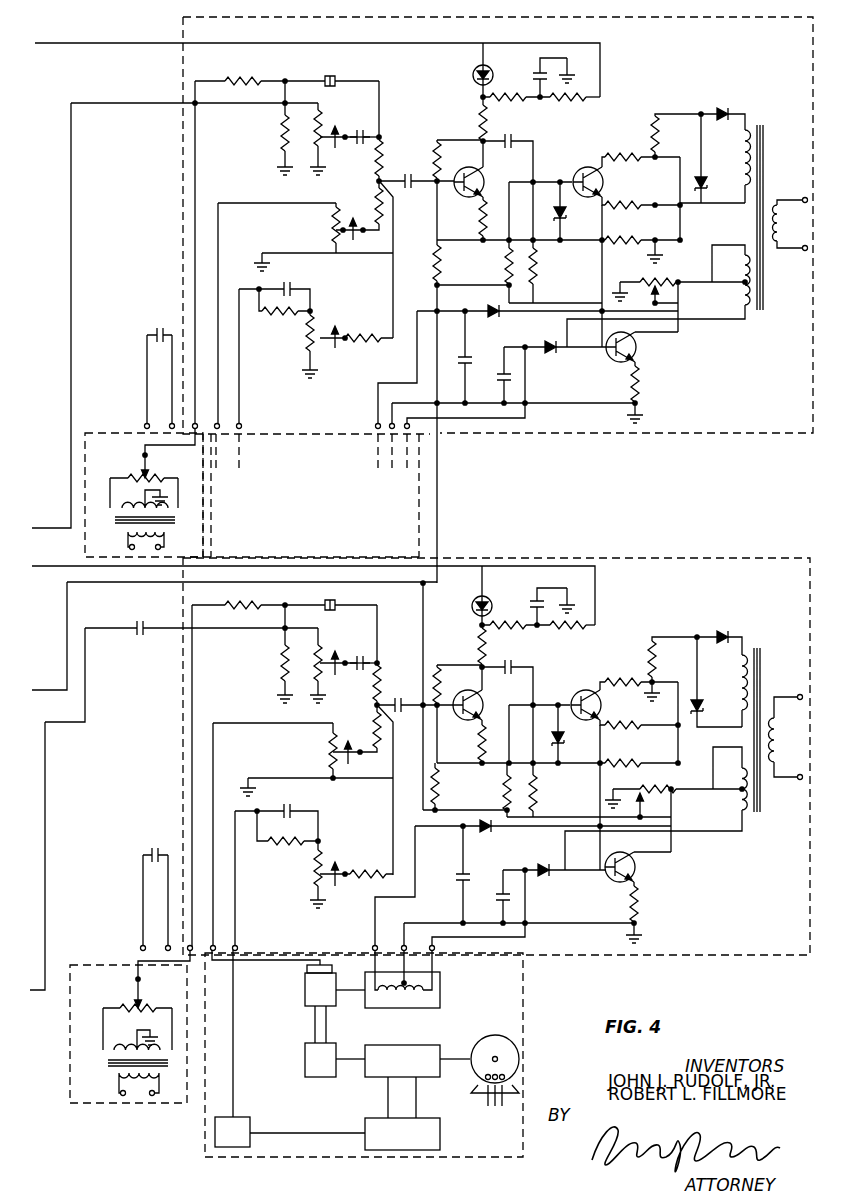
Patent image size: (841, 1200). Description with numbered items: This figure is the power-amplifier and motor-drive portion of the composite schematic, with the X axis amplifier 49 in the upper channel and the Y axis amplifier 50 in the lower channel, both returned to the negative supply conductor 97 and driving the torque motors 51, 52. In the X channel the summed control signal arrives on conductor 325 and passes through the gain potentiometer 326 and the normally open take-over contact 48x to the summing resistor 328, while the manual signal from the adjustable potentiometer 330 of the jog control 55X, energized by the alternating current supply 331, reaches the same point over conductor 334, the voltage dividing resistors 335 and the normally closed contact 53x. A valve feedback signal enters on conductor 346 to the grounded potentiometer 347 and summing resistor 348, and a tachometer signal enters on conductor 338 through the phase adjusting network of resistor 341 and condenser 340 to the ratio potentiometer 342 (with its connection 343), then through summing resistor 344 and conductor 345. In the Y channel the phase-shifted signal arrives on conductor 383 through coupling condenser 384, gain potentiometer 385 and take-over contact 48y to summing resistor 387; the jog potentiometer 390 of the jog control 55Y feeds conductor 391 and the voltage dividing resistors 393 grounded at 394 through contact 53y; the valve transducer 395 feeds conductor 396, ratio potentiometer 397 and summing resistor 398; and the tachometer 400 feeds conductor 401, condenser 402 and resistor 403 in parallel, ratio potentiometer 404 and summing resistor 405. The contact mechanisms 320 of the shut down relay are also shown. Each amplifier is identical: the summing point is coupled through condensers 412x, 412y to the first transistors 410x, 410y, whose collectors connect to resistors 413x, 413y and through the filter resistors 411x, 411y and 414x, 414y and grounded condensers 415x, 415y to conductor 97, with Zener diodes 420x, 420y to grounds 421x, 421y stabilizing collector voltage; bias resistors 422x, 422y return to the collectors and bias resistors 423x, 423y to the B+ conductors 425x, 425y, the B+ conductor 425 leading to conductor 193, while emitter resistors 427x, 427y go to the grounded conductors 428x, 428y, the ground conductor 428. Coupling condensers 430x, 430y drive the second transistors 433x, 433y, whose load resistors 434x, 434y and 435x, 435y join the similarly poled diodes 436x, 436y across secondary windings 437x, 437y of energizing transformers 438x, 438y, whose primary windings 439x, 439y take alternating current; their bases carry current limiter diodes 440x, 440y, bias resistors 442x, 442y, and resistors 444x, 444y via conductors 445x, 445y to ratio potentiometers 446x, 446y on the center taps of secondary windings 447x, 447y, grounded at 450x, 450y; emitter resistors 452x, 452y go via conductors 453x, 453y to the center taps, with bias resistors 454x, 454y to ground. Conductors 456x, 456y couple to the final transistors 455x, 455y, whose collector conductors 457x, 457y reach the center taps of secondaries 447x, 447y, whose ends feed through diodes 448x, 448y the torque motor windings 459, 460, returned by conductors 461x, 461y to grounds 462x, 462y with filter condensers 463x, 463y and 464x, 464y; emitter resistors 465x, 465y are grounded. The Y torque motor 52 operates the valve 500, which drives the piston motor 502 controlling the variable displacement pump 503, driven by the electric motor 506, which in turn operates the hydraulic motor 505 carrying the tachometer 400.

The B— conductor 97 is at (203, 43).
The X axis amplifier 49 is at (765, 396).
The Y axis amplifier 50 is at (728, 589).
The driving motor 51 is at (318, 512).
The torque motor 52 is at (283, 1034).
The conductor 325 is at (70, 518).
The conductor 334 is at (195, 236).
The voltage dividing resistors 335 is at (229, 80).
The normally closed contact 53x is at (330, 78).
The gain potentiometer 326 is at (320, 148).
The normally open contact 48x is at (359, 130).
The summing resistor 328 is at (381, 140).
The summing resistor 348 is at (375, 198).
The potentiometer 347 is at (334, 222).
The conductor 346 is at (218, 392).
The coupling condenser 412x is at (408, 188).
The conductor 345 is at (393, 290).
The grounded conductor 428x is at (393, 253).
The biasing resistor 422x is at (437, 152).
The Zener diode 420x is at (473, 75).
The resistor 411x is at (520, 82).
The resistor 414x is at (572, 98).
The grounded condenser 415x is at (536, 68).
The ground connection 421x is at (580, 72).
The resistor 413x is at (486, 122).
The first amplifying transistor 410x is at (485, 174).
The emitter resistor 427x is at (482, 218).
The condenser 430x is at (515, 136).
The current limiter diode 440x is at (566, 214).
The second transistor 433x is at (580, 178).
The load resistor 434x is at (622, 156).
The emitter resistor 452x is at (630, 196).
The bias resistor 454x is at (637, 228).
The conductor 453x is at (656, 152).
The load resistor 435x is at (655, 128).
The diodes 436x is at (704, 174).
The secondary winding 437x is at (752, 130).
The energizing transformer 438x is at (773, 191).
The primary winding 439x is at (781, 224).
The secondary winding 447x is at (740, 255).
The ratio potentiometer 446x is at (657, 280).
The ground 450x is at (618, 284).
The conductor 457x is at (686, 292).
The biasing resistor 423x is at (437, 265).
The B+ conductor 425x is at (481, 285).
The resistor 444x is at (505, 266).
The bias resistor 442x is at (536, 266).
The conductor 445x is at (586, 303).
The diodes 448x is at (497, 315).
The filter condenser 464x is at (467, 358).
The conductor 456x is at (556, 352).
The conductor 461x is at (437, 418).
The filter condenser 463x is at (510, 378).
The final amplifying transistor 455x is at (637, 345).
The emitter resistor 465x is at (630, 380).
The ground connection 462x is at (630, 414).
The condenser 340 is at (292, 285).
The resistor 341 is at (300, 310).
The summing resistor 344 is at (368, 336).
The ratio potentiometer 342 is at (318, 348).
The ground 343 is at (313, 374).
The conductor 338 is at (240, 420).
The contact mechanisms 320 is at (158, 347).
The adjustable potentiometer 330 is at (128, 466).
The jog control 55X is at (117, 540).
The alternating current supply 331 is at (170, 526).
The conductor 193 is at (67, 609).
The conductor 383 is at (46, 808).
The coupling condenser 384 is at (139, 637).
The conductor 391 is at (190, 758).
The voltage dividing resistors 393 is at (242, 610).
The normally closed contact 53y is at (339, 604).
The gain potentiometer 385 is at (317, 650).
The ground 394 is at (272, 698).
The summing resistor 387 is at (366, 680).
The normally open take-over contact 48y is at (360, 657).
The coupling condenser 412y is at (386, 672).
The summing resistor 398 is at (370, 724).
The ratio potentiometer 397 is at (328, 756).
The conductor 396 is at (213, 836).
The grounded conductor 428 is at (393, 780).
The B+ conductor 425 is at (421, 610).
The biasing resistor 422y is at (455, 660).
The Zener diode 420y is at (472, 608).
The resistor 411y is at (515, 618).
The resistor 414y is at (565, 627).
The grounded condenser 415y is at (533, 596).
The ground connection 421y is at (580, 603).
The resistor 413y is at (485, 646).
The first amplifying transistor 410y is at (484, 698).
The emitter resistor 427y is at (481, 742).
The condenser 430y is at (515, 663).
The current limiter diode 440y is at (572, 742).
The second transistor 433y is at (580, 698).
The load resistor 434y is at (625, 681).
The emitter resistor 452y is at (632, 721).
The bias resistor 454y is at (622, 760).
The conductor 453y is at (654, 658).
The load resistor 435y is at (654, 645).
The diodes 436y is at (700, 695).
The secondary winding 437y is at (748, 655).
The energizing transformer 438y is at (770, 690).
The primary winding 439y is at (777, 745).
The secondary winding 447y is at (740, 768).
The ratio potentiometer 446y is at (658, 788).
The ground 450y is at (612, 792).
The conductor 457y is at (684, 797).
The biasing resistor 423y is at (438, 786).
The B+ conductor 425y is at (480, 812).
The resistor 444y is at (503, 790).
The bias resistor 442y is at (537, 783).
The conductor 445y is at (584, 817).
The diodes 448y is at (493, 832).
The filter condenser 464y is at (462, 874).
The conductor 456y is at (547, 866).
The conductor 461y is at (426, 923).
The filter condenser 463y is at (500, 898).
The final amplifying transistor 455y is at (622, 856).
The emitter resistor 465y is at (630, 902).
The ground connection 462y is at (630, 934).
The condenser 402 is at (290, 805).
The resistor 403 is at (296, 840).
The ratio potentiometer 404 is at (316, 872).
The summing resistor 405 is at (364, 872).
The conductor 401 is at (236, 880).
The adjustable potentiometer 390 is at (126, 994).
The jog control 55Y is at (108, 1090).
The transducer 395 is at (306, 970).
The valve 500 is at (304, 995).
The torque motor winding 459 is at (392, 998).
The piston motor 502 is at (337, 1050).
The torque motor winding 460 is at (428, 990).
The variable displacement pump 503 is at (416, 1046).
The electric motor 506 is at (486, 1045).
The hydraulic motor 505 is at (378, 1122).
The tachometer 400 is at (250, 1120).